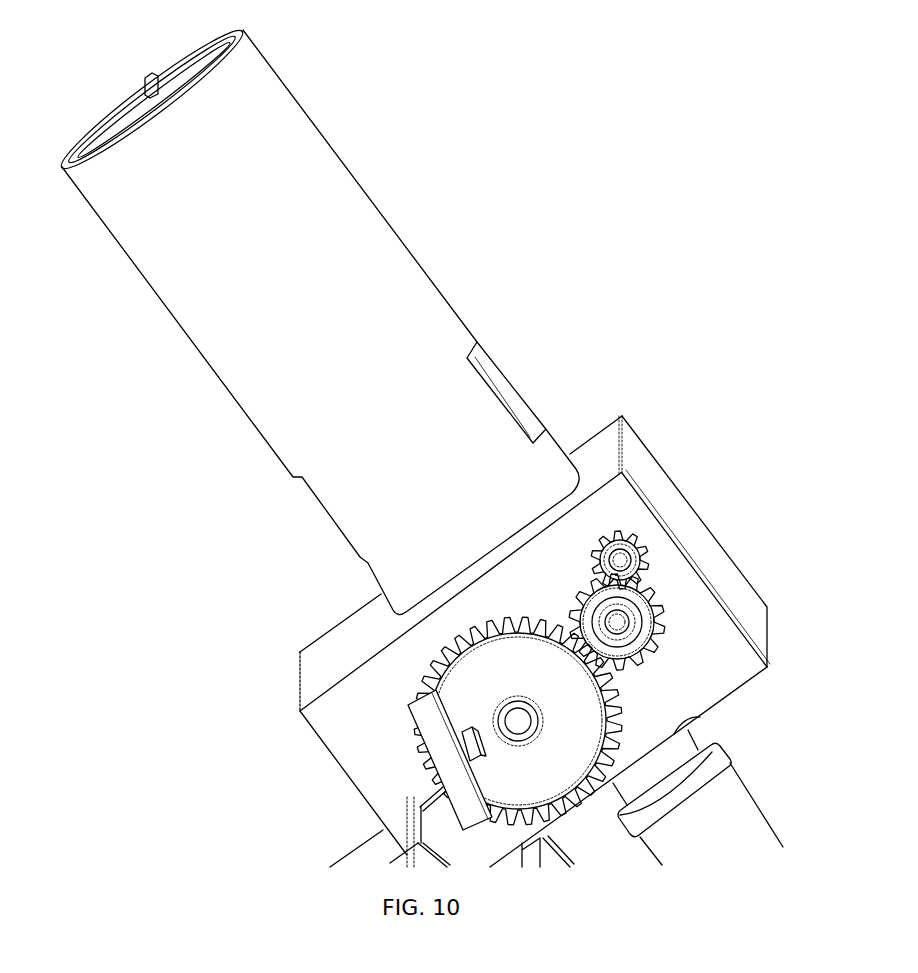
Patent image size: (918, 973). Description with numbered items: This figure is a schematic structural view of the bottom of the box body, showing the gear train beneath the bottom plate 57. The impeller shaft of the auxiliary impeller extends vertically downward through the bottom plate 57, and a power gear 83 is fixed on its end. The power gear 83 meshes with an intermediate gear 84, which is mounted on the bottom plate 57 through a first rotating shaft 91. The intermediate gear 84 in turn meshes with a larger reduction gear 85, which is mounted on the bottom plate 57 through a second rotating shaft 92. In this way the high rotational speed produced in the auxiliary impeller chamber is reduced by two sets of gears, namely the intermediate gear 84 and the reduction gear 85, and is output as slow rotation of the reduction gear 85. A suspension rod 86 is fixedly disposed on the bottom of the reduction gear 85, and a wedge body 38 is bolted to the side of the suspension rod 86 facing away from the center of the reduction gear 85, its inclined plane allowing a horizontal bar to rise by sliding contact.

The wedge body 38 is at (453, 773).
The bottom plate 57 is at (340, 703).
The power gear 83 is at (615, 538).
The intermediate gear 84 is at (657, 633).
The reduction gear 85 is at (470, 670).
The suspension rod 86 is at (465, 745).
The first rotating shaft 91 is at (620, 621).
The second rotating shaft 92 is at (520, 723).